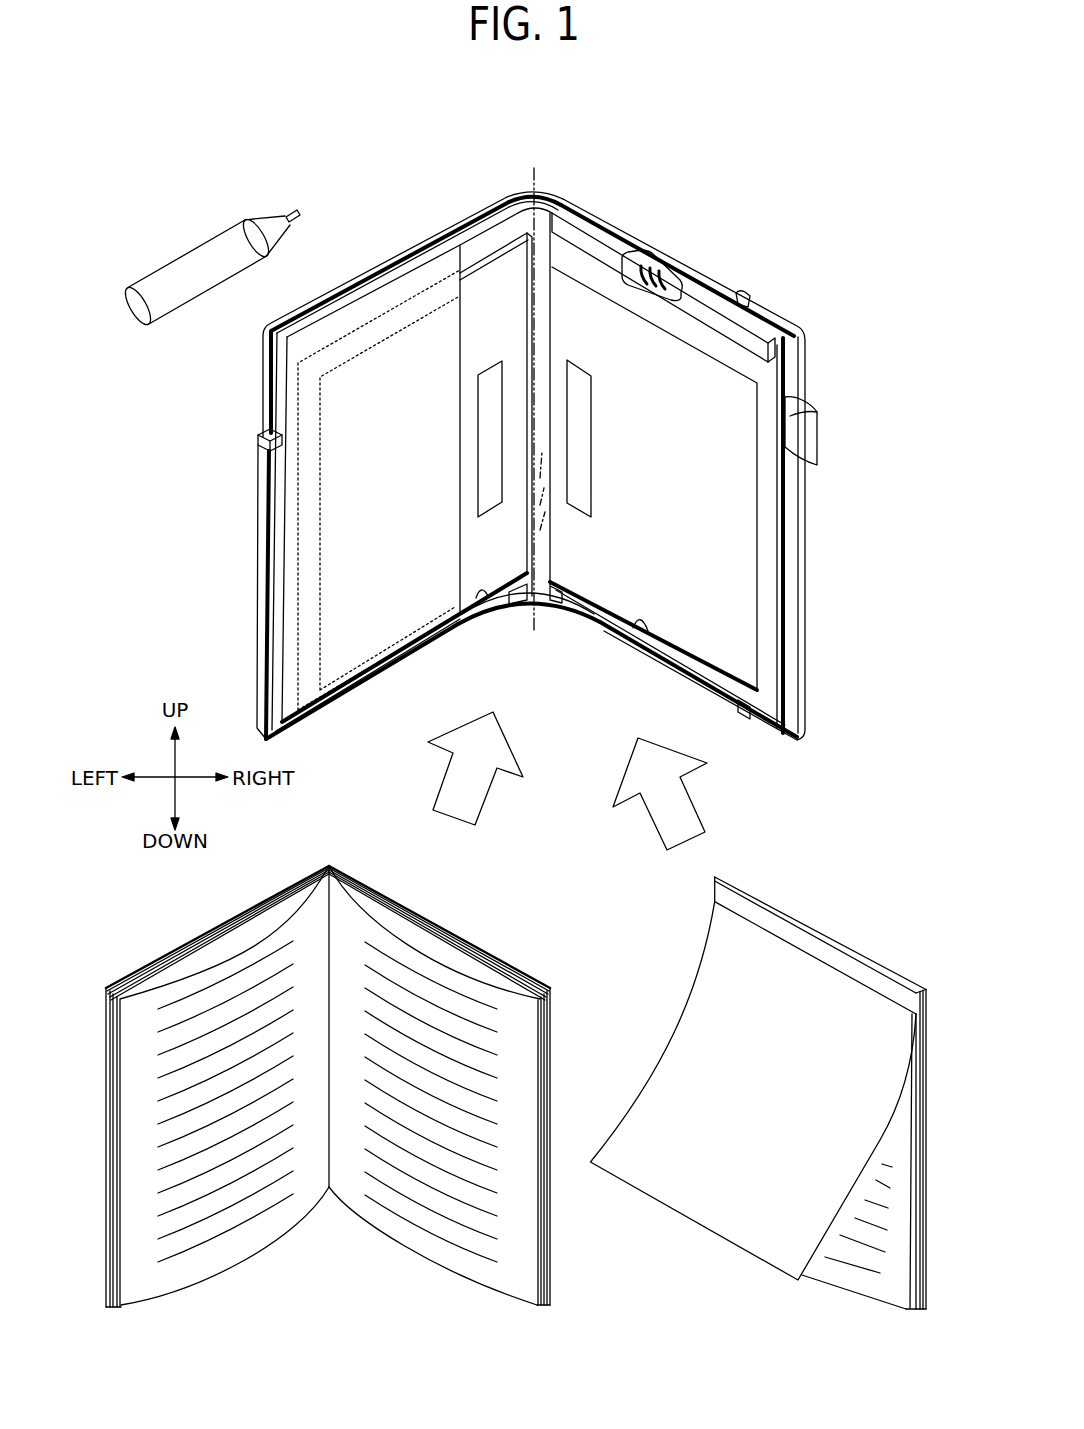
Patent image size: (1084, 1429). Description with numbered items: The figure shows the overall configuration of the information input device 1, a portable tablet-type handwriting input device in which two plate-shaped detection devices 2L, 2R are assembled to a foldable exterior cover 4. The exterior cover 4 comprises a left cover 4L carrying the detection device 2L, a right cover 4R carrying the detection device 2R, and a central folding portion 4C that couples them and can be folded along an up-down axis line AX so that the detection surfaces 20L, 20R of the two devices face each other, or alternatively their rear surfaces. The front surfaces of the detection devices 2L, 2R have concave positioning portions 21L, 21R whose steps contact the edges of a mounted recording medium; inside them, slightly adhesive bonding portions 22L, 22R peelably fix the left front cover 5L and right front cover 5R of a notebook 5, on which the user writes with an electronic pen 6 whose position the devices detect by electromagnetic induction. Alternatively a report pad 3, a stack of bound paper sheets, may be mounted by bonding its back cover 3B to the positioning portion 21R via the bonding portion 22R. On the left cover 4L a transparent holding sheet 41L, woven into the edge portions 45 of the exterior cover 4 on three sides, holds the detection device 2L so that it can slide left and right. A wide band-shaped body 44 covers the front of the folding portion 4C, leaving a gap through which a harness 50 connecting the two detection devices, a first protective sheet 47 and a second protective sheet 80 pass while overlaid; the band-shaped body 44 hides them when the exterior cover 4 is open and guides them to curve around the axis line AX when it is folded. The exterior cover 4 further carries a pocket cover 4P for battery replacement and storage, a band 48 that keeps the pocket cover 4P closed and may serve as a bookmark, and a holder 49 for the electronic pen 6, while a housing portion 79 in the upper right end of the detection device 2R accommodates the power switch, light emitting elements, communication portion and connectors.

The information input device 1 is at (832, 192).
The exterior cover 4 is at (568, 188).
The left cover 4L is at (378, 265).
The folding portion 4C is at (528, 192).
The right cover 4R is at (663, 247).
The pocket cover 4P is at (258, 487).
The edge portions 45 is at (270, 593).
The detection device 2L is at (476, 252).
The detection device 2R is at (606, 234).
The detection surface 20L is at (478, 337).
The detection surface 20R is at (693, 383).
The bonding portion 22L is at (490, 447).
The bonding portion 22R is at (578, 440).
The holding sheet 41L is at (407, 560).
The positioning portion 21L is at (483, 590).
The positioning portion 21R is at (637, 620).
The band-shaped body 44 is at (548, 588).
The harness 50 is at (540, 478).
The second protective sheet 80 is at (540, 505).
The first protective sheet 47 is at (540, 530).
The band 48 is at (741, 300).
The housing portion 79 is at (756, 327).
The holder 49 is at (803, 438).
The axis line AX is at (535, 399).
The electronic pen 6 is at (180, 277).
The notebook 5 is at (387, 870).
The left front cover 5L is at (200, 934).
The right front cover 5R is at (497, 949).
The report pad 3 is at (836, 890).
The back cover 3B is at (903, 972).